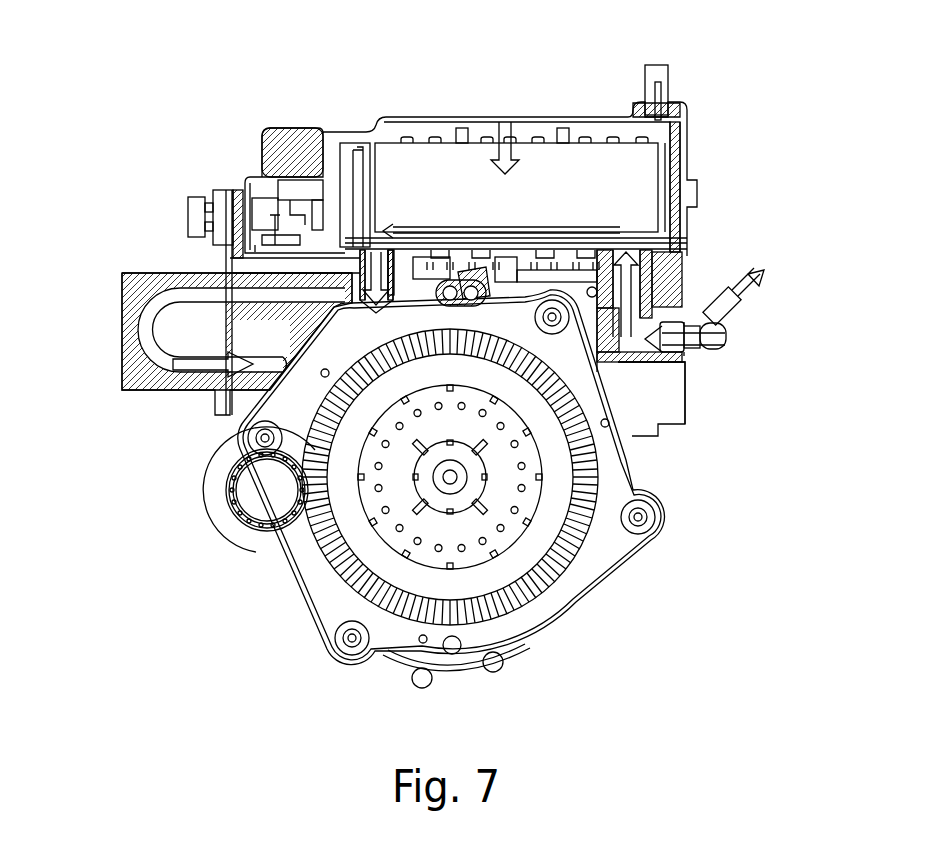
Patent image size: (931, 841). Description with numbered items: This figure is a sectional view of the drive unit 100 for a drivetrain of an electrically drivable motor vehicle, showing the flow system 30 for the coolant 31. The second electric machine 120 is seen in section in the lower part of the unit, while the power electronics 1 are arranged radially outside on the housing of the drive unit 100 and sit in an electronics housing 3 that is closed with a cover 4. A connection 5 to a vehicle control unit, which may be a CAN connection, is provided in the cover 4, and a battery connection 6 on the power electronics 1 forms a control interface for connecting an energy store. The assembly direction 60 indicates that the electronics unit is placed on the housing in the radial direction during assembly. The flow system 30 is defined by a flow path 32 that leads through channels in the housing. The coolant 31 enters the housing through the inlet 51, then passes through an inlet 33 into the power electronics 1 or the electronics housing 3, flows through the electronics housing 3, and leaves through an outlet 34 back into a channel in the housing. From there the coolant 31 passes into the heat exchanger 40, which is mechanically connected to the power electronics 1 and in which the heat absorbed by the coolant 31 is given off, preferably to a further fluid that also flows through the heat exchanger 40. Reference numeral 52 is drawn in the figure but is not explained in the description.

The power electronics 1 is at (630, 186).
The electronics housing 3 is at (580, 116).
The cover 4 is at (580, 116).
The connection to a vehicle control unit 5 is at (654, 65).
The battery connection 6 is at (198, 218).
The flow system 30 is at (373, 248).
The coolant 31 is at (693, 340).
The flow path 32 is at (727, 340).
The inlet 33 is at (605, 285).
The outlet 34 is at (362, 267).
The heat exchanger 40 is at (135, 288).
The inlet 51 is at (703, 348).
The sensor 52 is at (740, 308).
The assembly direction 60 is at (505, 117).
The drive unit 100 is at (527, 86).
The second electric machine 120 is at (541, 594).